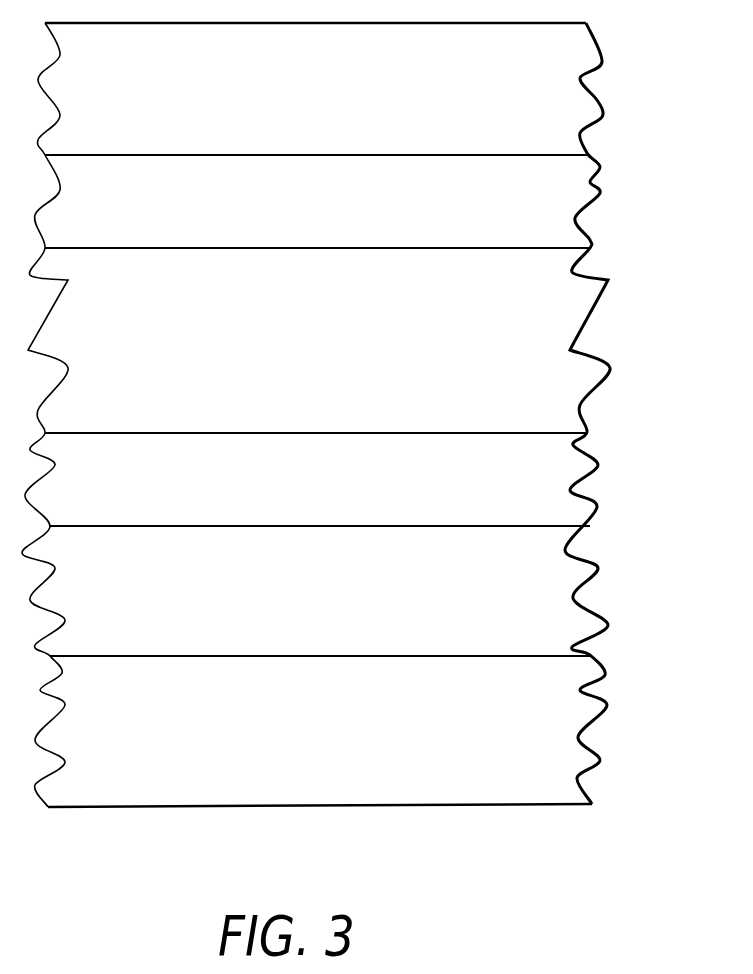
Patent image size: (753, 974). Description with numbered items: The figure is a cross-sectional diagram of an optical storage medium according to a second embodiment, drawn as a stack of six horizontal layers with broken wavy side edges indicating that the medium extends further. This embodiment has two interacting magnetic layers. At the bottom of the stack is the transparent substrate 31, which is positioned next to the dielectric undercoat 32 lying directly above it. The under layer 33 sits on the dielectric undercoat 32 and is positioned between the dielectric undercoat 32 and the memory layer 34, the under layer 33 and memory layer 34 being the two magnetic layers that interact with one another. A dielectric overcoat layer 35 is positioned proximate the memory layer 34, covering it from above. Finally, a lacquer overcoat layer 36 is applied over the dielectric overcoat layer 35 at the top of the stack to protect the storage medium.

The transparent substrate 31 is at (597, 750).
The dielectric undercoat 32 is at (598, 610).
The under layer 33 is at (582, 500).
The memory layer 34 is at (598, 357).
The dielectric overcoat layer 35 is at (600, 193).
The lacquer overcoat layer 36 is at (597, 100).